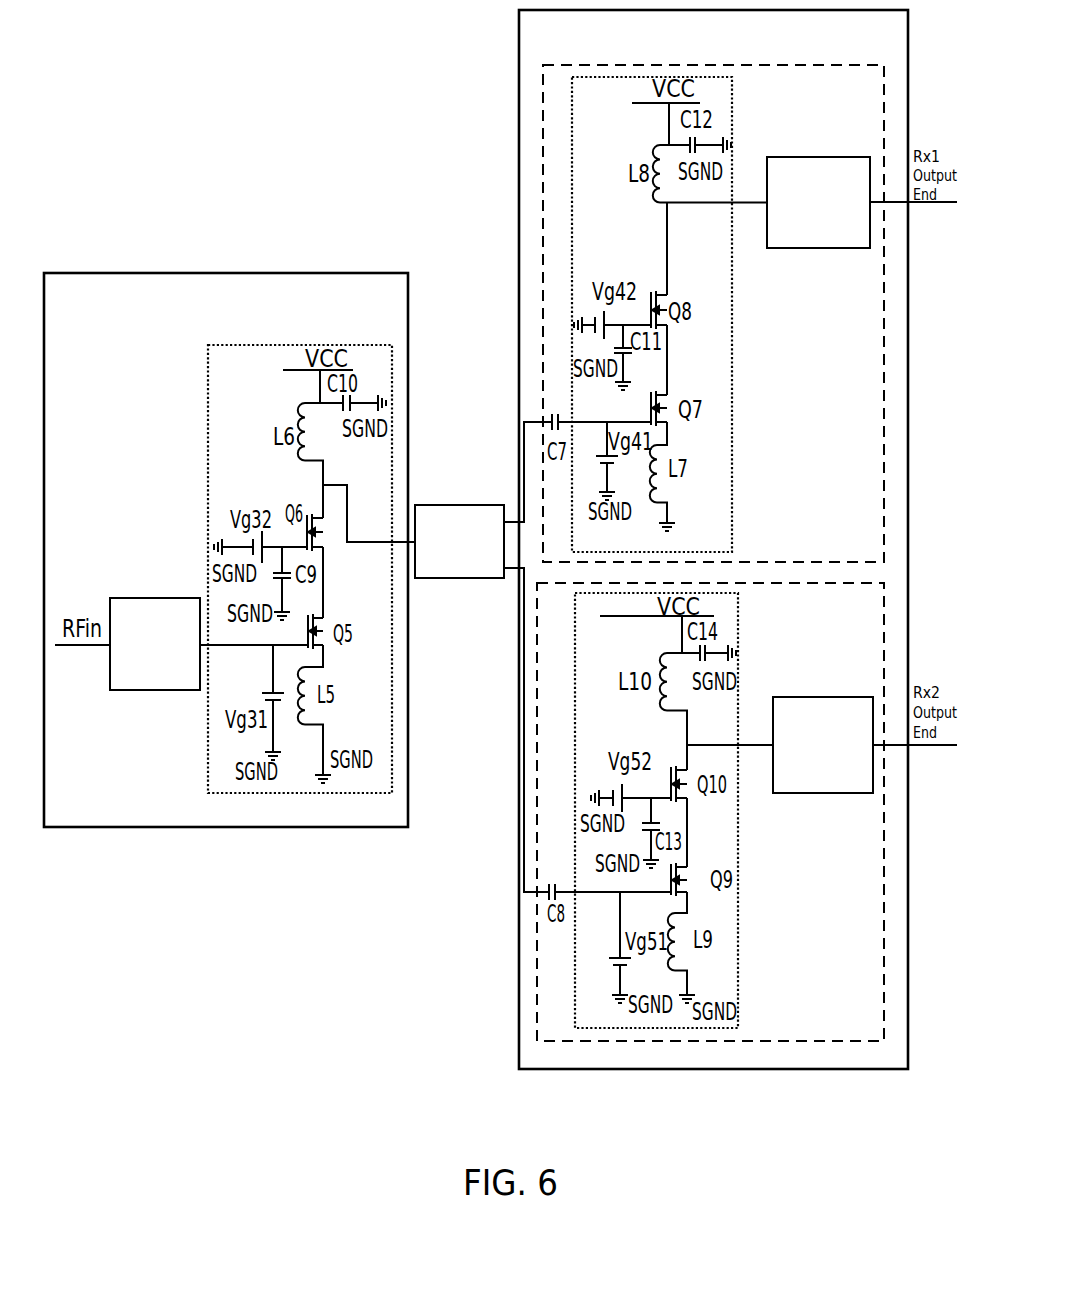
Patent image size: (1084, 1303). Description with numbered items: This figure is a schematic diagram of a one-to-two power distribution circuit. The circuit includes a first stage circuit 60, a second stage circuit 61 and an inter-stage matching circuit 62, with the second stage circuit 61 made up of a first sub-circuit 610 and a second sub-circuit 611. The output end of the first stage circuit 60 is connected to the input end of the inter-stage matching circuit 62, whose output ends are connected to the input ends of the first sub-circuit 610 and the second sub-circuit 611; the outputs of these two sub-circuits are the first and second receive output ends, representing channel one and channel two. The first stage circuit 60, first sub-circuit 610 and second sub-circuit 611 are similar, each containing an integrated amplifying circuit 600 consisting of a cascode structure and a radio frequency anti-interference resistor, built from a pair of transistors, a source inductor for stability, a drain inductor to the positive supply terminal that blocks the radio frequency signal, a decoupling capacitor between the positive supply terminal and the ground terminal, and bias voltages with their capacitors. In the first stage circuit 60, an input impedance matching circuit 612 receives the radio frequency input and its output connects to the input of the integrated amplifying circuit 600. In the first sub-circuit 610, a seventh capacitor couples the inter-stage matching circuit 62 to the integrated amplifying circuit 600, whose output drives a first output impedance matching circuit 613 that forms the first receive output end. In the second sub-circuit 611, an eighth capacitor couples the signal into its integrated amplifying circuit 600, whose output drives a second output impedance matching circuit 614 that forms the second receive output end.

The first stage circuit 60 is at (258, 821).
The second stage circuit 61 is at (805, 52).
The inter-stage matching circuit 62 is at (493, 576).
The integrated amplifying circuit 600 is at (208, 345).
The first sub-circuit 610 is at (872, 547).
The second sub-circuit 611 is at (830, 1040).
The input impedance matching circuit 612 is at (188, 689).
The first output impedance matching circuit 613 is at (853, 247).
The second output impedance matching circuit 614 is at (862, 789).